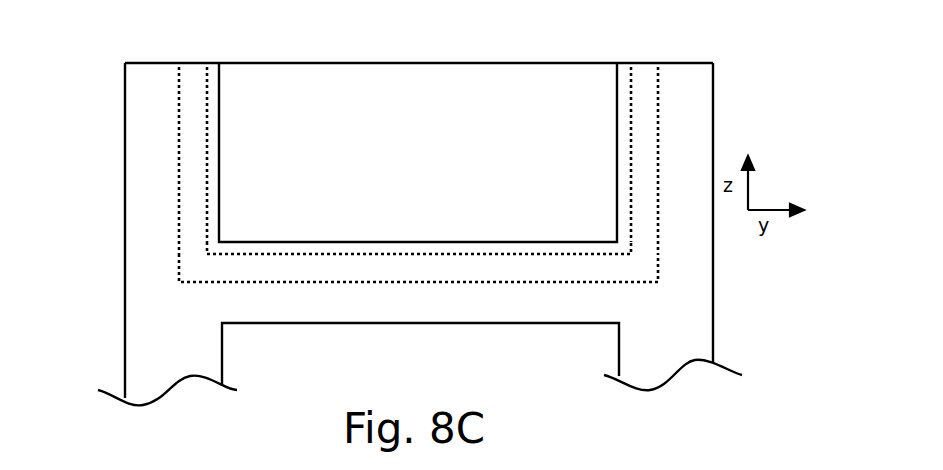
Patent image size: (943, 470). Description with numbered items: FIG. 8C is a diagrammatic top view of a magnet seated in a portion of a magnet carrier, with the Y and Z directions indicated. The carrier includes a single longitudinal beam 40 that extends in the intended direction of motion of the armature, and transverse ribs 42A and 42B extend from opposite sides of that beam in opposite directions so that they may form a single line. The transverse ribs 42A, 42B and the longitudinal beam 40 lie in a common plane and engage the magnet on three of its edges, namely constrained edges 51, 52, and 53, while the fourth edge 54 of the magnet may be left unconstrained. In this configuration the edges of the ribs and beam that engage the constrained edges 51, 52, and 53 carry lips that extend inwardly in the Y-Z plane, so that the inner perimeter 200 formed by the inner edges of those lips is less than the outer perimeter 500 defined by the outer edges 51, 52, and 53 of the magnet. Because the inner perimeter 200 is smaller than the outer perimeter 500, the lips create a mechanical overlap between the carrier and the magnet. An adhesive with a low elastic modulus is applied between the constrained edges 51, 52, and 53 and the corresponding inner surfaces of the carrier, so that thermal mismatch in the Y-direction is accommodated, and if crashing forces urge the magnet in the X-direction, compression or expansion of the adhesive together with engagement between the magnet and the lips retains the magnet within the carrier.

The fourth edge 54 is at (450, 63).
The transverse rib 42A is at (125, 183).
The transverse rib 42B is at (713, 130).
The longitudinal beam 40 is at (478, 323).
The inner perimeter 200 is at (207, 112).
The outer perimeter 500 is at (343, 282).
The constrained edge of the magnet 52 is at (519, 282).
The constrained edge of the magnet 51 is at (179, 139).
The constrained edge of the magnet 53 is at (657, 142).